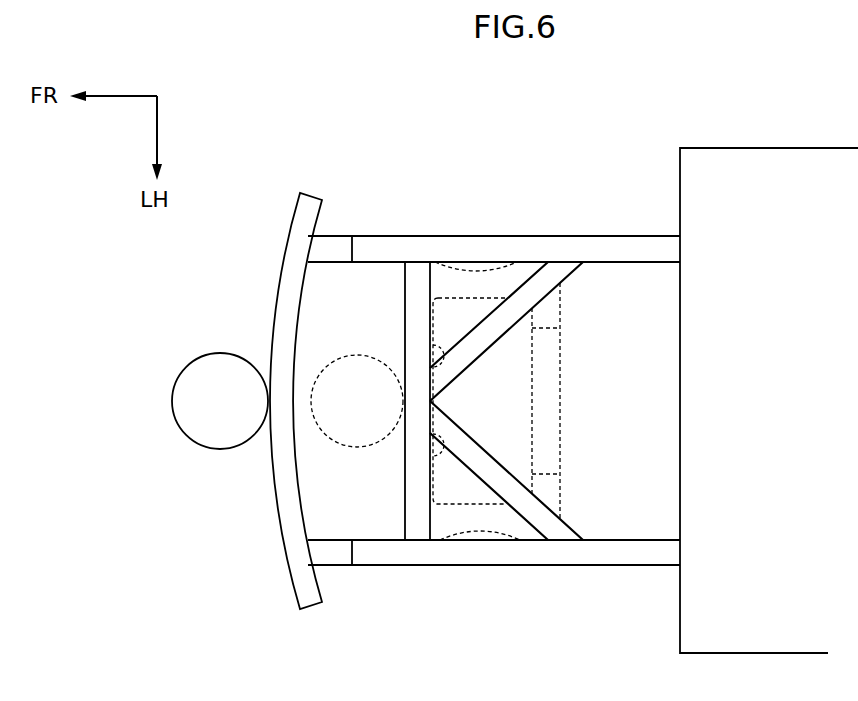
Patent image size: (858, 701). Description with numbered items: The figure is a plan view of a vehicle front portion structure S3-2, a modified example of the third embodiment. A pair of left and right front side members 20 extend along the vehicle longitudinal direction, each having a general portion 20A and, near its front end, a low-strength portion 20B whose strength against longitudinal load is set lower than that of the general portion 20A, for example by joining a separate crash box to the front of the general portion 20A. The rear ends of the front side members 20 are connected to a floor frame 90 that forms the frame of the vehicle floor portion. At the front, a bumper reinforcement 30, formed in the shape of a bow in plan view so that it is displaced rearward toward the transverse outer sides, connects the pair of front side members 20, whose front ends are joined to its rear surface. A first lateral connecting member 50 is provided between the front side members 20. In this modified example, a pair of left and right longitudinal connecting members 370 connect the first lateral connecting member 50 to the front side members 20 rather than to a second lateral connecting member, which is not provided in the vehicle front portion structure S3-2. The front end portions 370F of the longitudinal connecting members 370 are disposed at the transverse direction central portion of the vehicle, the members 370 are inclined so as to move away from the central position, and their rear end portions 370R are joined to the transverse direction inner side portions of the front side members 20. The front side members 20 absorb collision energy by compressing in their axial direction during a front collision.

The front side member 20 is at (494, 400).
The general portion 20A is at (541, 236).
The low-strength portion 20B is at (336, 247).
The bumper reinforcement 30 is at (262, 330).
The first lateral connecting member 50 is at (405, 319).
The floor frame 90 is at (771, 402).
The longitudinal connecting member 370 is at (487, 401).
The front end portion 370F is at (431, 347).
The rear end portion 370R is at (583, 264).
The vehicle front portion structure S3-2 is at (596, 161).